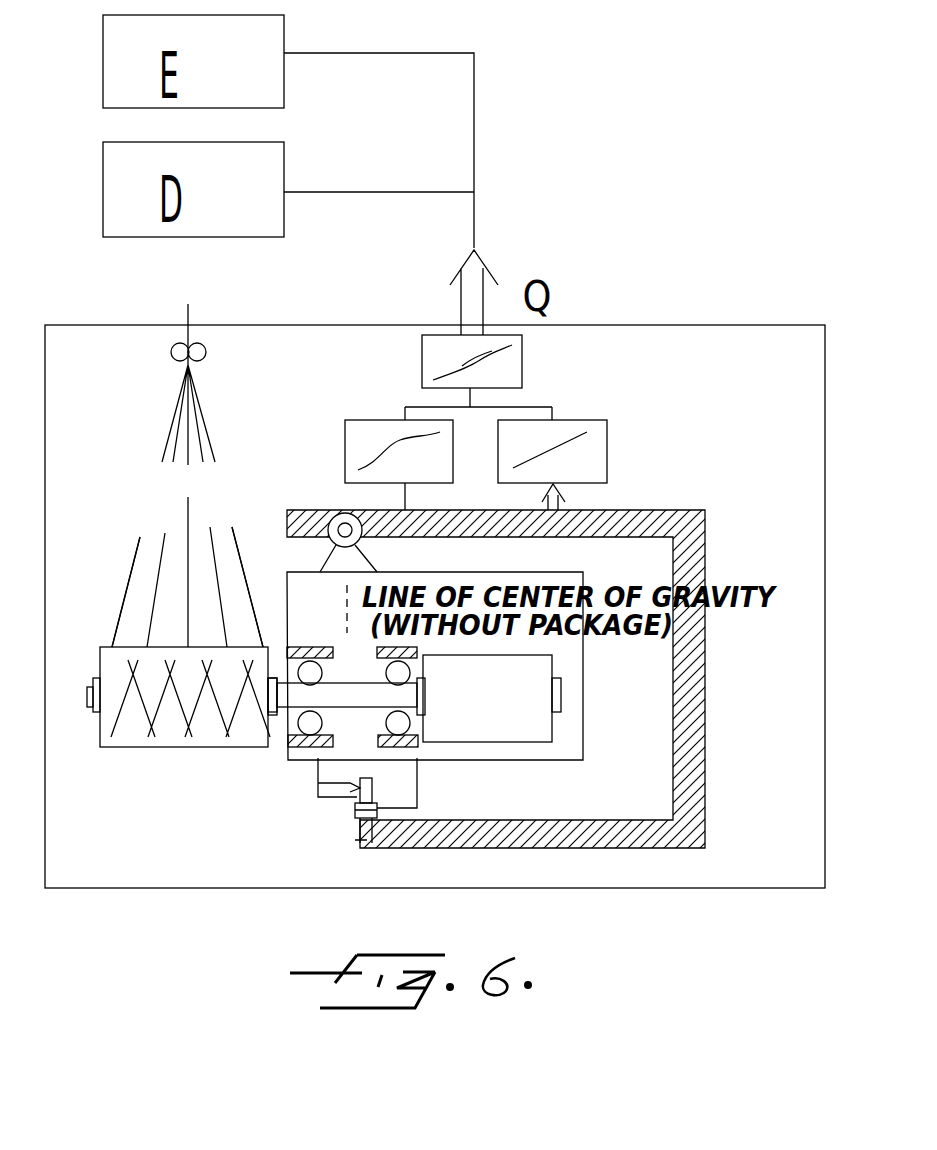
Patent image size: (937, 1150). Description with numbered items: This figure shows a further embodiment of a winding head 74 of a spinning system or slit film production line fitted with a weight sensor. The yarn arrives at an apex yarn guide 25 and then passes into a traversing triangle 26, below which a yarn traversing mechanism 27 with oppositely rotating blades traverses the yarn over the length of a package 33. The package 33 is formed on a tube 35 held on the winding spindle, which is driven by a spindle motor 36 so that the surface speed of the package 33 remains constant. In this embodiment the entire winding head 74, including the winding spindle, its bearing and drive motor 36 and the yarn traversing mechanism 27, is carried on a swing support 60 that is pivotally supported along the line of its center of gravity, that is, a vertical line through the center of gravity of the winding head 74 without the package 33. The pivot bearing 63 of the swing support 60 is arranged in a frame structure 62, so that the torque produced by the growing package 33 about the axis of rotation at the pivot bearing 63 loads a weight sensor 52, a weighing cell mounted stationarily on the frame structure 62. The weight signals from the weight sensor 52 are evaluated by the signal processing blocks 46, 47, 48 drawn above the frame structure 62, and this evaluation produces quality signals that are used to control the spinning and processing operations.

The apex yarn guide 25 is at (170, 350).
The traversing triangle 26 is at (183, 555).
The yarn traversing mechanism 27 is at (160, 587).
The package 33 is at (177, 732).
The tube 35 is at (95, 712).
The spindle motor 36 is at (528, 730).
The sensor / converter 46 is at (385, 400).
The sensor / converter 47 is at (607, 465).
The output converter 48 is at (523, 373).
The weight sensor 52 is at (355, 812).
The swing support 60 is at (333, 553).
The frame structure 62 is at (705, 703).
The pivot bearing 63 is at (343, 513).
The winding head 74 is at (825, 500).